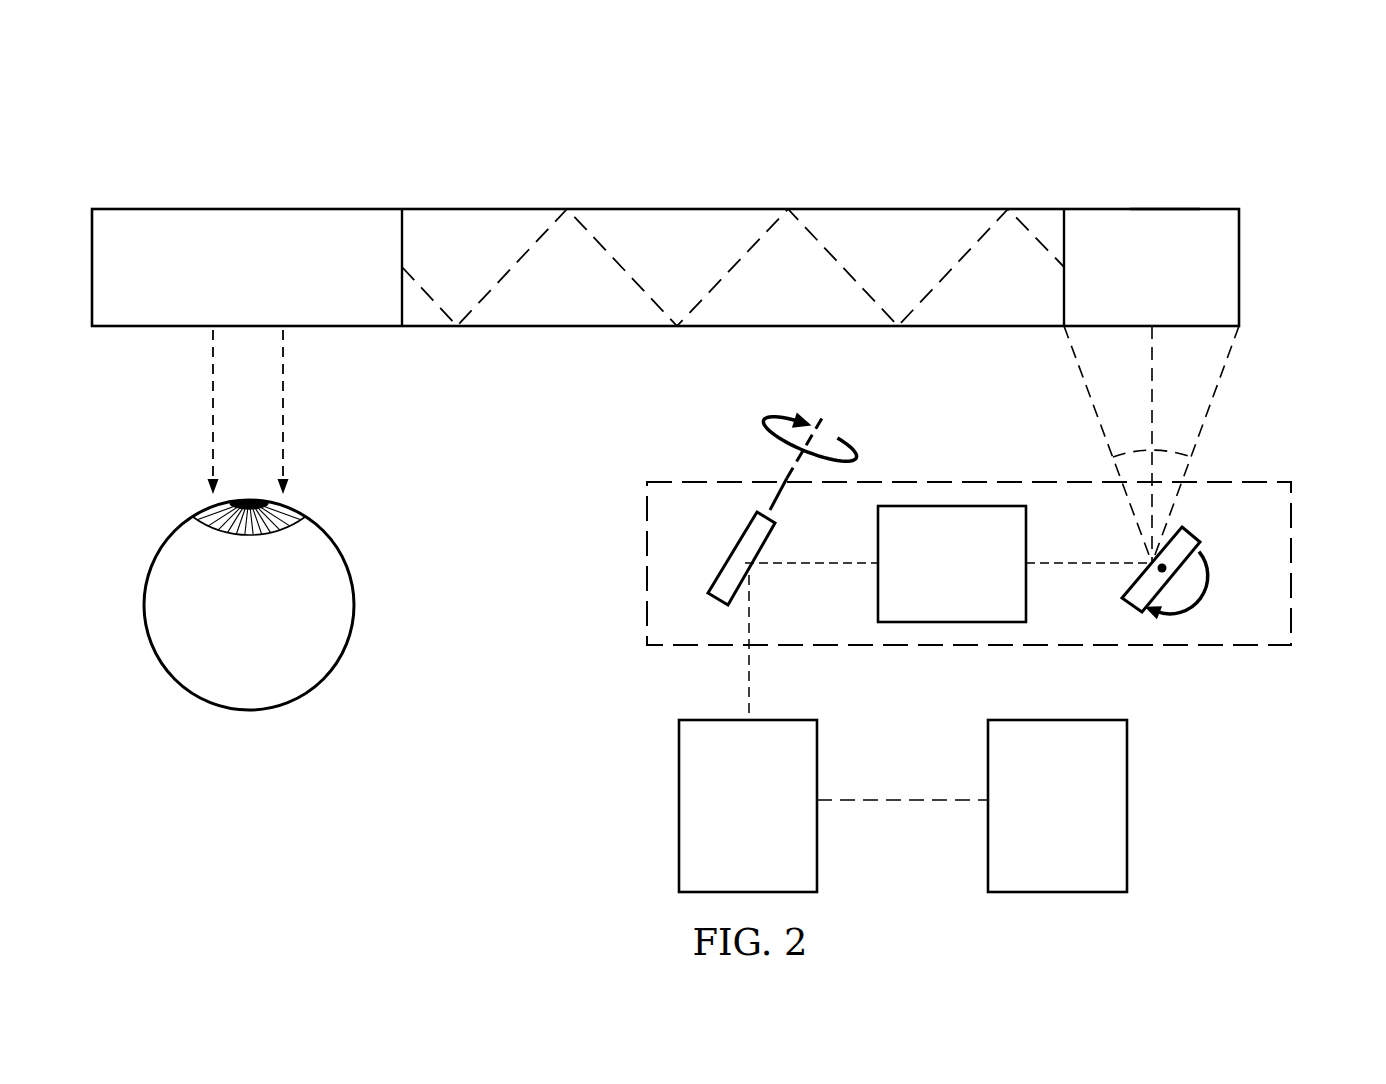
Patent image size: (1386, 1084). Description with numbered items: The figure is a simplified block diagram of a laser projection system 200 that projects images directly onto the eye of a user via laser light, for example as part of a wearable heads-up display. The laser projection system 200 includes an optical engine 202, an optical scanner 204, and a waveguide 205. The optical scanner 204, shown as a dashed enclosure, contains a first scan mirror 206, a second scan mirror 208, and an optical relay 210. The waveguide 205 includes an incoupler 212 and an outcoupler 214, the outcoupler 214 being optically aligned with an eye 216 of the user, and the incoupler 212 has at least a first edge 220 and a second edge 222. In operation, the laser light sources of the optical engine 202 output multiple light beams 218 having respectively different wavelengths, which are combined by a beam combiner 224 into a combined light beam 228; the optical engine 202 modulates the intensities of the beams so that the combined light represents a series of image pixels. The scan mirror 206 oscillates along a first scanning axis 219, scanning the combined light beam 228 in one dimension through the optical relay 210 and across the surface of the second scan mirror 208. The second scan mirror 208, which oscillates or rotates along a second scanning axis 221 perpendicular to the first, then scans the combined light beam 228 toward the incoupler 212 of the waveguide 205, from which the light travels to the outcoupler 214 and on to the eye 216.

The laser projection system 200 is at (340, 103).
The optical engine 202 is at (1127, 812).
The optical scanner 204 is at (1304, 578).
The waveguide 205 is at (483, 218).
The first scan mirror 206 is at (740, 543).
The second scan mirror 208 is at (1197, 525).
The optical relay 210 is at (1027, 583).
The incoupler 212 is at (1174, 297).
The outcoupler 214 is at (270, 298).
The eye 216 is at (160, 666).
The light beams 218 is at (917, 803).
The first scanning axis 219 is at (818, 432).
The first edge 220 is at (1166, 208).
The second scanning axis 221 is at (1200, 576).
The second edge 222 is at (1167, 330).
The beam combiner 224 is at (679, 812).
The combined light beam 228 is at (750, 675).